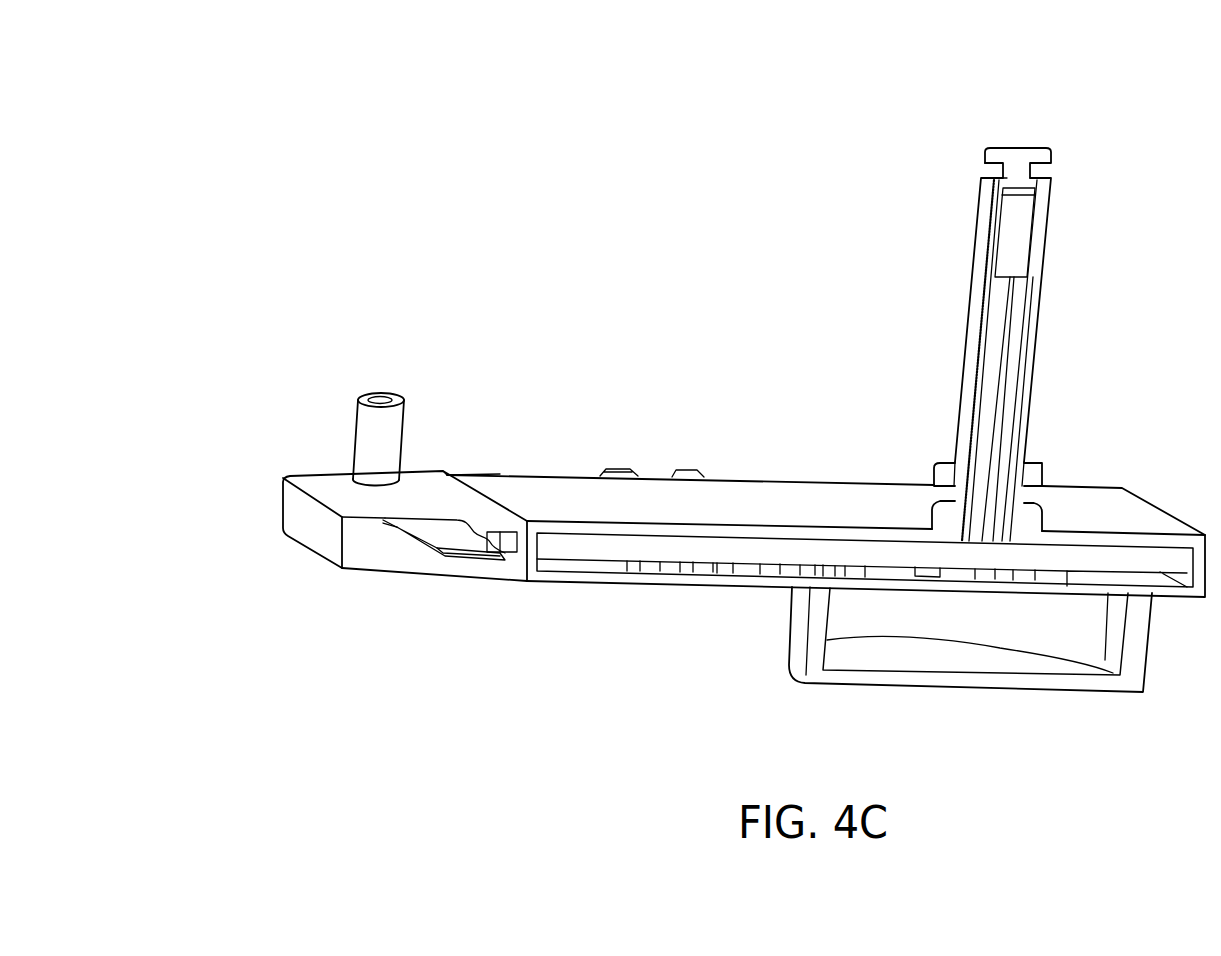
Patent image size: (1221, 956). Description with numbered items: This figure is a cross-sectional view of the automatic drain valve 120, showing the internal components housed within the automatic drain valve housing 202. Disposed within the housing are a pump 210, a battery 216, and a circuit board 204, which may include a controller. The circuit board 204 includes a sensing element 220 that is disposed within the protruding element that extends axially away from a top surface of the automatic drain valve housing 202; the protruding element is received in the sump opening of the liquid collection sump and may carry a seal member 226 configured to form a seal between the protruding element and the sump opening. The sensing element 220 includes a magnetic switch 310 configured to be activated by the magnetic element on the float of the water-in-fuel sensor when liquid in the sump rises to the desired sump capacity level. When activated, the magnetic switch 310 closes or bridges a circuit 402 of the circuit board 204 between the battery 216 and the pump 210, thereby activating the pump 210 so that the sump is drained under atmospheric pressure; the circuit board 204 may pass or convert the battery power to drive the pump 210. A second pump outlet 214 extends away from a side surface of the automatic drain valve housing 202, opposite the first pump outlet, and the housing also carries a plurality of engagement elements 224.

The automatic drain valve 120 is at (412, 106).
The automatic drain valve housing 202 is at (282, 510).
The circuit board 204 is at (615, 552).
The pump 210 is at (428, 548).
The second pump outlet 214 is at (353, 428).
The battery 216 is at (953, 655).
The sensing element 220 is at (970, 257).
The engagement elements 224 is at (613, 468).
The seal member 226 is at (1045, 476).
The magnetic switch 310 is at (1020, 227).
The circuit 402 is at (1013, 330).